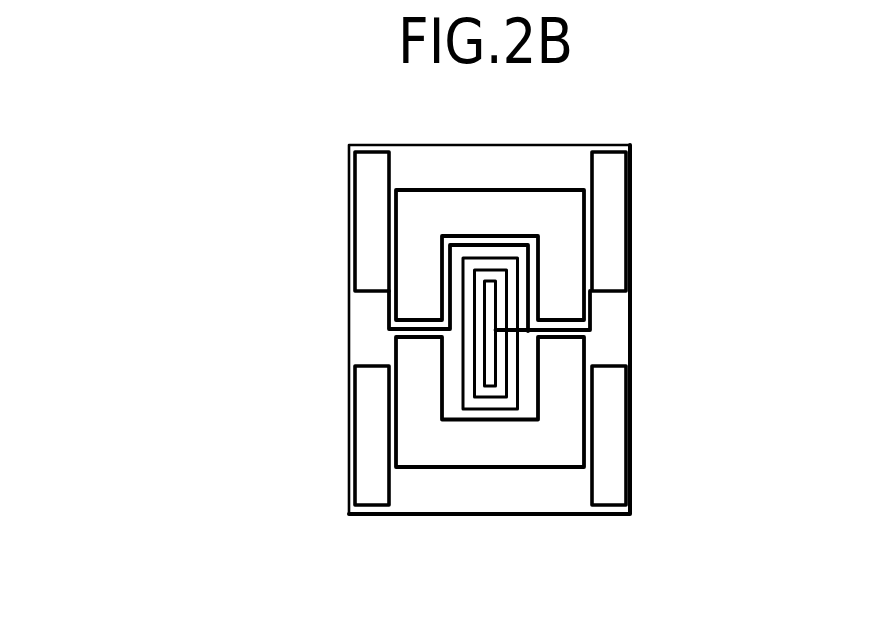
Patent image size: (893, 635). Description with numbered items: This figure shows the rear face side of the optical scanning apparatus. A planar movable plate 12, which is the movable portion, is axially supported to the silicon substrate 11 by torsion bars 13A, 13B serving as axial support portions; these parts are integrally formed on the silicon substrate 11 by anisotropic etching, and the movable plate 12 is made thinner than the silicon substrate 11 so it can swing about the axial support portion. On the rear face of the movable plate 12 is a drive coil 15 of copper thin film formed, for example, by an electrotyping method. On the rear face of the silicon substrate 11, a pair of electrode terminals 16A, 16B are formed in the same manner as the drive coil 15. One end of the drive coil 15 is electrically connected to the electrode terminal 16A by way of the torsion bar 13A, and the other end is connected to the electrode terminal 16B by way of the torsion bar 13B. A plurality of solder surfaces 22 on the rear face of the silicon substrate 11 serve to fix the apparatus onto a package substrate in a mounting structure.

The silicon substrate 11 is at (612, 340).
The movable plate 12 is at (538, 387).
The torsion bar 13A is at (551, 318).
The torsion bar 13B is at (423, 318).
The drive coil 15 is at (494, 398).
The electrode terminal 16A is at (605, 175).
The electrode terminal 16B is at (370, 192).
The solder surfaces 22 is at (372, 474).